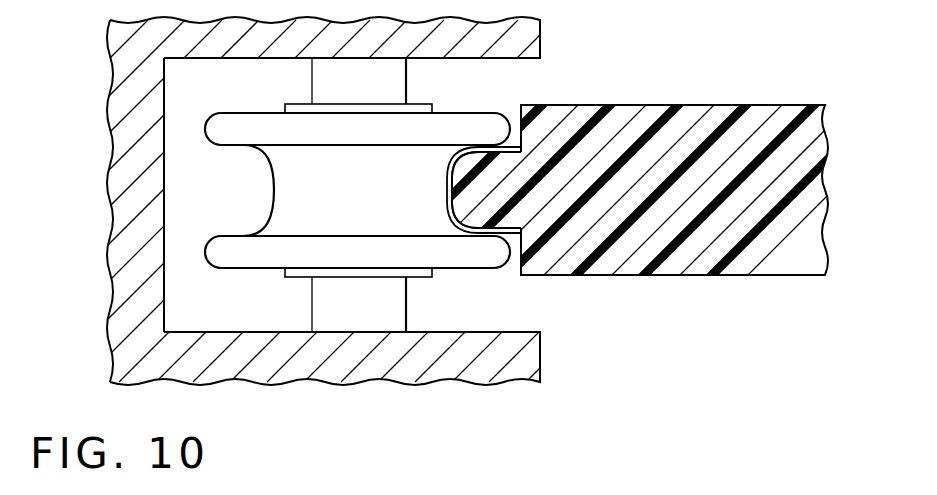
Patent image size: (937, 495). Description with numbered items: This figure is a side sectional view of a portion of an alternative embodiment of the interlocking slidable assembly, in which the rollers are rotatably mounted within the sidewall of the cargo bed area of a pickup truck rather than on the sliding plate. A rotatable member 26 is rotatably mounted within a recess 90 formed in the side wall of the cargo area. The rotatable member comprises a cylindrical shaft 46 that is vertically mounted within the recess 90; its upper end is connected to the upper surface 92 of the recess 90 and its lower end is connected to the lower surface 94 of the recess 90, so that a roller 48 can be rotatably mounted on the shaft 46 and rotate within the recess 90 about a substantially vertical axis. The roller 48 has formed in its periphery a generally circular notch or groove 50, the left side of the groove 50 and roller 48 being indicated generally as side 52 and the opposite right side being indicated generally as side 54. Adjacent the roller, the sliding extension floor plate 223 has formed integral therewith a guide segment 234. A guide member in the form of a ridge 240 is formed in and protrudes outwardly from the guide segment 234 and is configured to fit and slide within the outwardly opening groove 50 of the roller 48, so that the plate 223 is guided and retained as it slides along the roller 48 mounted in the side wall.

The rotatable member 26 is at (280, 95).
The shaft 46 is at (387, 86).
The roller 48 is at (268, 258).
The groove 50 is at (348, 214).
The left side of groove 52 is at (226, 202).
The right side of groove 54 is at (540, 203).
The recess 90 is at (244, 283).
The upper surface 92 is at (452, 60).
The lower surface 94 is at (492, 332).
The sliding extension floor plate 223 is at (509, 179).
The guide segment 234 is at (575, 167).
The ridge 240 is at (483, 188).